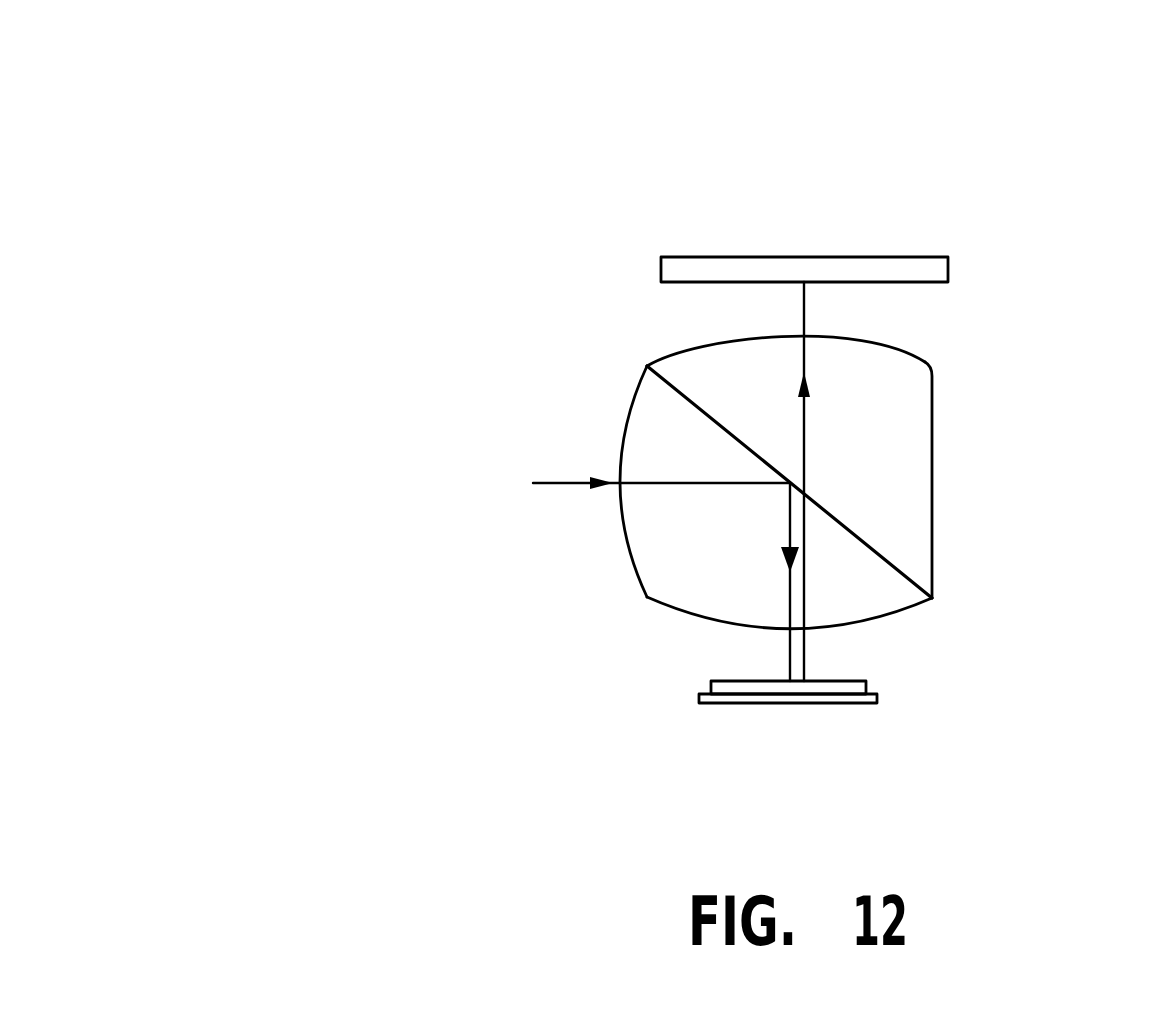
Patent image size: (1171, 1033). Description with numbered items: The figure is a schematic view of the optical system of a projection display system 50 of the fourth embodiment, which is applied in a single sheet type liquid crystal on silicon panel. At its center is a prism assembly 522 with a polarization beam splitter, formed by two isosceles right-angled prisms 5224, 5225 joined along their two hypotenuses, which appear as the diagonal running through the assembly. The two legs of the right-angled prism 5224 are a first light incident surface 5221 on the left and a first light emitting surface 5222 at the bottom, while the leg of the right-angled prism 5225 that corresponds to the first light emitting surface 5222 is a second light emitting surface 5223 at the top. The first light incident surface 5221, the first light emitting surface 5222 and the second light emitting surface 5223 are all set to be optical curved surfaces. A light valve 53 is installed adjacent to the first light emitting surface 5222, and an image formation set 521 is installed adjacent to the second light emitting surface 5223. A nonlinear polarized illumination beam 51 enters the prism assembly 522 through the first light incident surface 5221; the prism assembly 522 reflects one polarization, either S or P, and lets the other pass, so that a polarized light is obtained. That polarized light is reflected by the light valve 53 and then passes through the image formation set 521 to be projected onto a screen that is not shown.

The projection display system 50 is at (346, 158).
The nonlinear polarized illumination beam 51 is at (557, 482).
The image formation set 521 is at (882, 267).
The prism assembly 522 is at (932, 483).
The first light incident surface 5221 is at (622, 548).
The first light emitting surface 5222 is at (892, 617).
The second light emitting surface 5223 is at (890, 347).
The right-angled prism 5224 is at (652, 437).
The right-angled prism 5225 is at (910, 425).
The light valve 53 is at (842, 703).